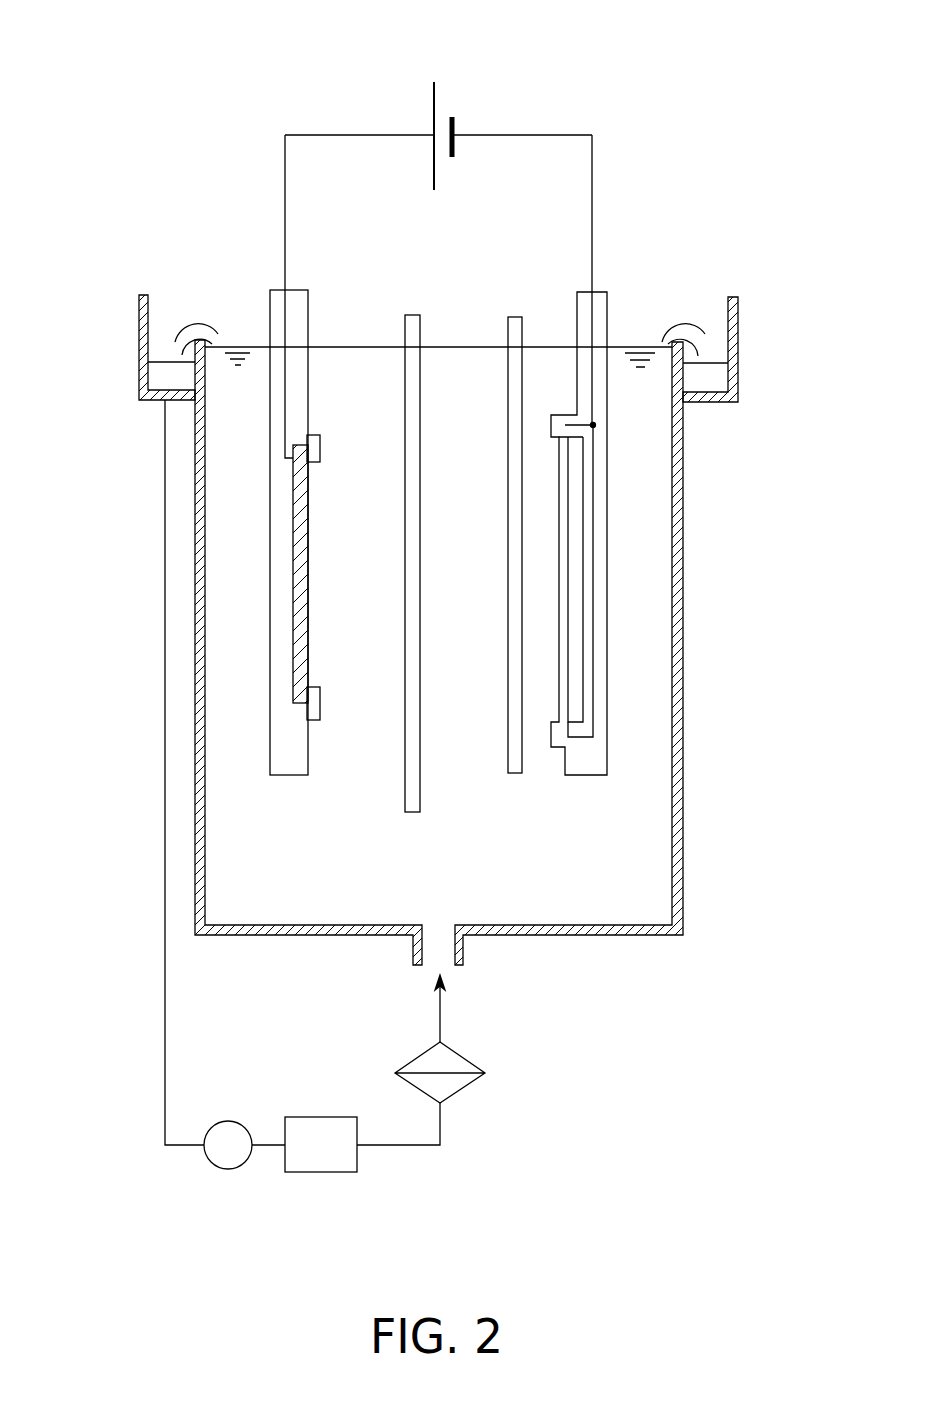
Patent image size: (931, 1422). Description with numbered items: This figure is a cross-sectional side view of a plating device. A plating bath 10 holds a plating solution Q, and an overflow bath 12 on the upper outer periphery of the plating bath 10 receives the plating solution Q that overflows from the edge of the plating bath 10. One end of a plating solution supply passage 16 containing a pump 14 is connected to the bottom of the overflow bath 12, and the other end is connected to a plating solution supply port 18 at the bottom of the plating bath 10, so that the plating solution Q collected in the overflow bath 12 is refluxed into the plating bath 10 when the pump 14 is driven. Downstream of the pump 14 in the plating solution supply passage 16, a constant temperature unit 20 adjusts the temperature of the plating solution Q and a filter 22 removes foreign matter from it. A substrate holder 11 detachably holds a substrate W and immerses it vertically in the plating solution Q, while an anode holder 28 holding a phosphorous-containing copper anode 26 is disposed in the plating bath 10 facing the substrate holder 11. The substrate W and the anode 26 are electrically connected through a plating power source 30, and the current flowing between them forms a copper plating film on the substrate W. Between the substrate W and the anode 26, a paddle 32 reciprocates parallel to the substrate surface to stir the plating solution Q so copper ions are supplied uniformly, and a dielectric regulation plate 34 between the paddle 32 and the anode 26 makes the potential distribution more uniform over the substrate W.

The plating bath 10 is at (683, 620).
The substrate holder 11 is at (607, 700).
The overflow bath 12 is at (738, 345).
The pump 14 is at (228, 1169).
The plating solution supply passage 16 is at (165, 975).
The plating solution supply port 18 is at (465, 945).
The constant temperature unit 20 is at (315, 1172).
The filter 22 is at (460, 1055).
The anode 26 is at (302, 528).
The anode holder 28 is at (285, 652).
The plating power source 30 is at (445, 95).
The paddle 32 is at (522, 330).
The regulation plate 34 is at (427, 333).
The substrate W is at (565, 490).
The plating solution Q is at (358, 881).